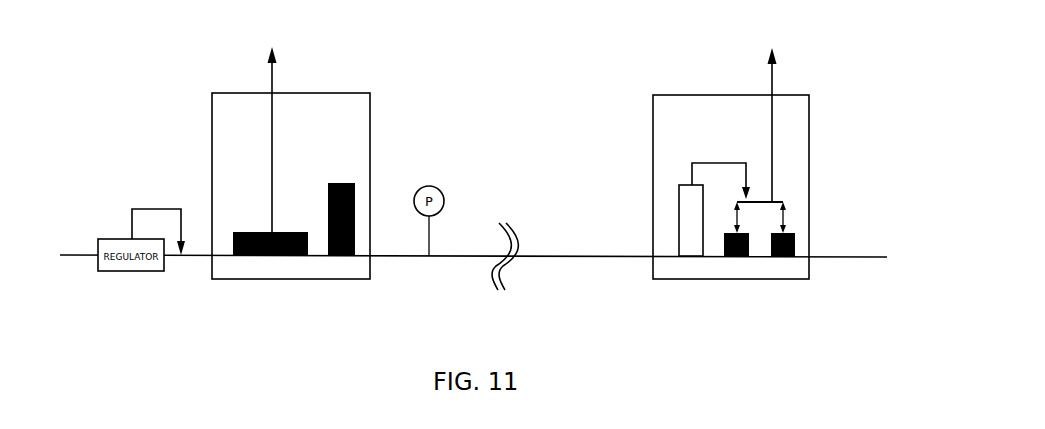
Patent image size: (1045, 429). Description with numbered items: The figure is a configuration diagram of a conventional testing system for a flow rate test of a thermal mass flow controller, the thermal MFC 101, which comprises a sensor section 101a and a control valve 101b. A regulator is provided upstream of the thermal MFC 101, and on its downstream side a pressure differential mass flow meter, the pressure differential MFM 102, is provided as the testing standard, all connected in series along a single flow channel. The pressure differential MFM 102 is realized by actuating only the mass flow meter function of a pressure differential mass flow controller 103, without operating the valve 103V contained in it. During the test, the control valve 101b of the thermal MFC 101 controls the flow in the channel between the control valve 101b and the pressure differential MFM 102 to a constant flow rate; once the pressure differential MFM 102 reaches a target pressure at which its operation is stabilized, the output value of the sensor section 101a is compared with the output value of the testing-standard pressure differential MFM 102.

The thermal MFC 101 is at (233, 93).
The sensor section 101a is at (254, 232).
The control valve 101b is at (338, 183).
The pressure differential MFM 102 is at (803, 210).
The pressure differential mass flow controller 103 is at (679, 95).
The valve 103V is at (687, 185).